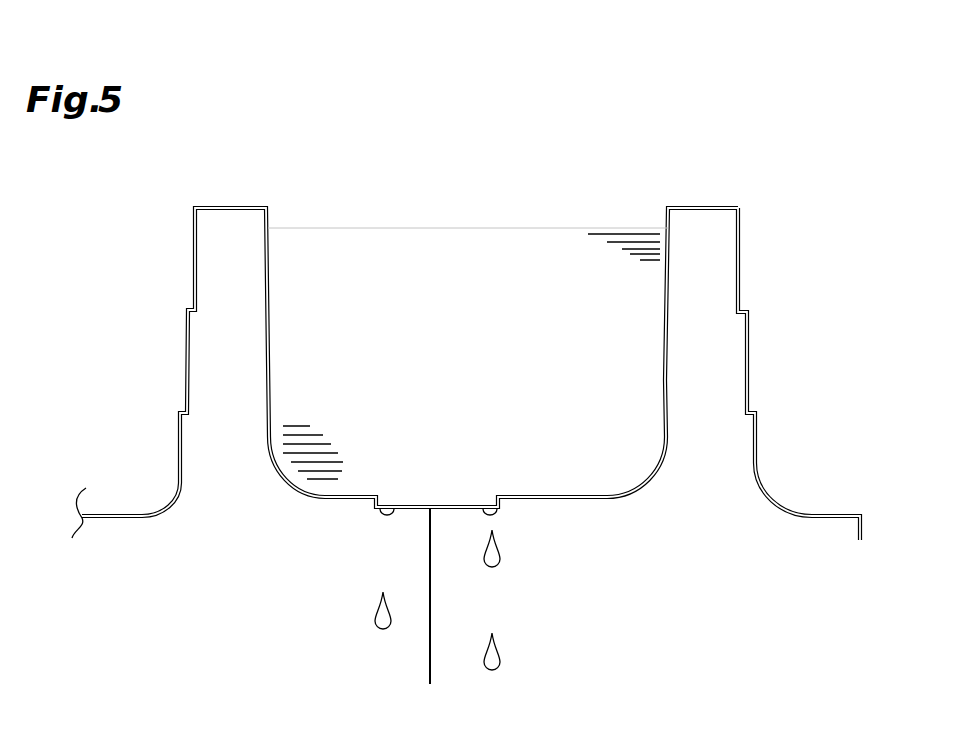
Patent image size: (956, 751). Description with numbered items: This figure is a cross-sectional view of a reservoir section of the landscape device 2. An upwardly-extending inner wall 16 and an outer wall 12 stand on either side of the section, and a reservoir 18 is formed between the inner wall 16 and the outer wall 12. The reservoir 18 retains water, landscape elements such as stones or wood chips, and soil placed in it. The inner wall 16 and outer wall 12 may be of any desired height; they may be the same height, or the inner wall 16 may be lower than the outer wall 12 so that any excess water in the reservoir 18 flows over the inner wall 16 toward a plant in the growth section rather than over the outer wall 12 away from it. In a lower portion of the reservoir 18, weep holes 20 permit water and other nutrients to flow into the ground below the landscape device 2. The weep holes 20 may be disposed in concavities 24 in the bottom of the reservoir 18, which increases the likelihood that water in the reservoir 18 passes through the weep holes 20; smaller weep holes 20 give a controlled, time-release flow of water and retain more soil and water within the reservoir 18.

The landscape device 2 is at (690, 207).
The outer wall 12 is at (748, 312).
The inner wall 16 is at (200, 207).
The reservoir 18 is at (480, 241).
The weep hole 20 is at (377, 510).
The concavity 24 is at (430, 621).